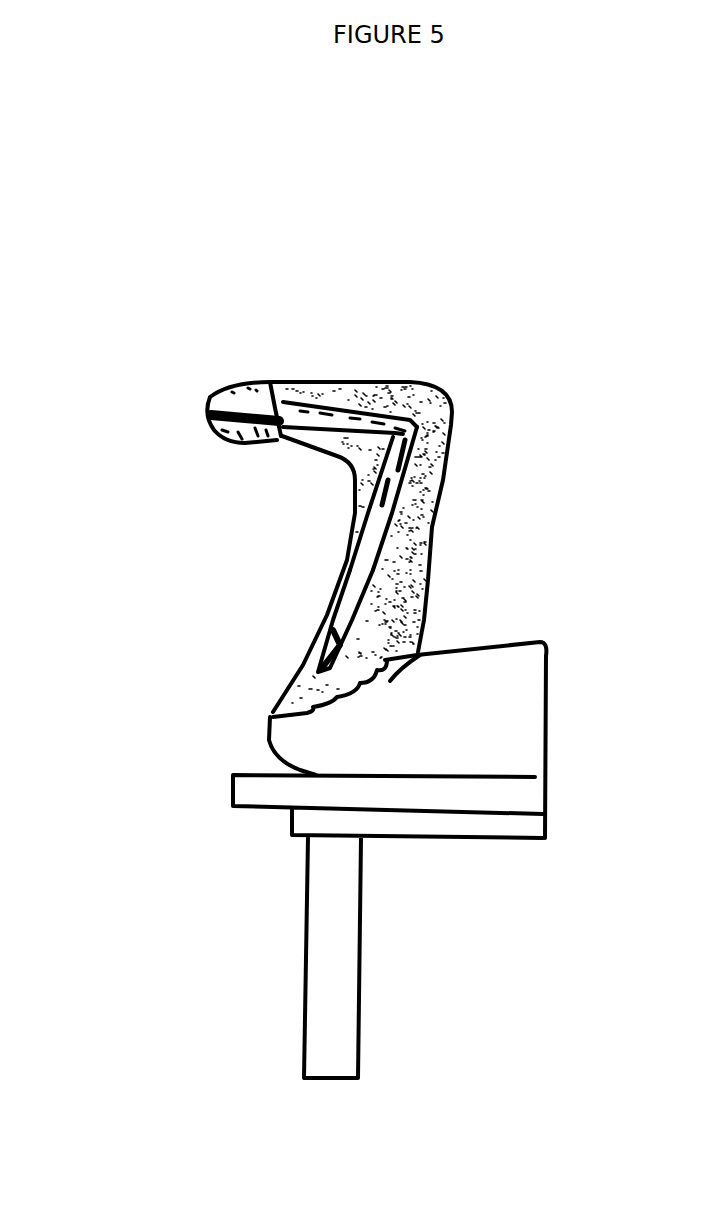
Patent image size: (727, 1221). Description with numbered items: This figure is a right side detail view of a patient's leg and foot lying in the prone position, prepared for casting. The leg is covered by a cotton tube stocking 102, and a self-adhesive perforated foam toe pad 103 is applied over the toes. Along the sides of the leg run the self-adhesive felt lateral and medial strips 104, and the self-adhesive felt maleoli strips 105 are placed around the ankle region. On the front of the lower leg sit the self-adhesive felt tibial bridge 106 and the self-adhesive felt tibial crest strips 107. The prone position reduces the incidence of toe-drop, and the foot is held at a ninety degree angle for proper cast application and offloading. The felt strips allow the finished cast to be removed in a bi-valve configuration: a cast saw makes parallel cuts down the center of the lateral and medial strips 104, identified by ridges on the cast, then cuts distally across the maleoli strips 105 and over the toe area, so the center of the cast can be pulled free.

The cotton tube stocking 102 is at (427, 597).
The self-adhesive perforated foam toe pad 103 is at (212, 393).
The self-adhesive felt lateral and medial strips 104 is at (330, 620).
The self-adhesive felt maleoli strips 105 is at (357, 410).
The self-adhesive felt tibial bridge 106 is at (303, 658).
The self-adhesive felt tibial crest strips 107 is at (345, 553).